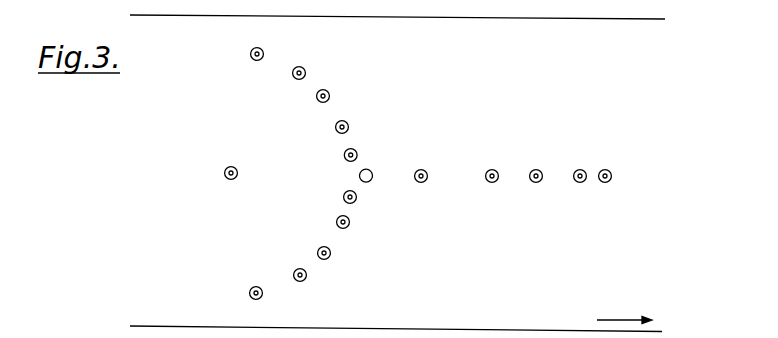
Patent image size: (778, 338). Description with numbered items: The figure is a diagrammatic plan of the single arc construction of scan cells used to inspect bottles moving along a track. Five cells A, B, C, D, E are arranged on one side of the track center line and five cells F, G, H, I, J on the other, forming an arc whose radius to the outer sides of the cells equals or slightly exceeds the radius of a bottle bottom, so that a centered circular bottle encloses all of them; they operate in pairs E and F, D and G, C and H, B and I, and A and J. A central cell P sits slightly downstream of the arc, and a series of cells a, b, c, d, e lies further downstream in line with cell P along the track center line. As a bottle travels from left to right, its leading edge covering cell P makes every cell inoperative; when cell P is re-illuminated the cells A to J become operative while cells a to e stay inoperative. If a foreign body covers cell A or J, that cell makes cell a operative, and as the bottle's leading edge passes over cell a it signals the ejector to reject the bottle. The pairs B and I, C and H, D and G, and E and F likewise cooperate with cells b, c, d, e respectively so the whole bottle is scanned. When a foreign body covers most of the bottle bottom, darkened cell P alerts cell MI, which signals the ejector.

The scan cell A is at (250, 63).
The scan cell B is at (293, 83).
The scan cell C is at (315, 105).
The scan cell D is at (333, 129).
The scan cell E is at (342, 156).
The scan cell F is at (340, 193).
The scan cell G is at (332, 220).
The scan cell H is at (315, 253).
The scan cell I is at (294, 273).
The scan cell J is at (249, 284).
The cell MI is at (228, 186).
The central cell P is at (358, 173).
The downstream cell a is at (421, 188).
The downstream cell b is at (492, 188).
The downstream cell c is at (535, 188).
The downstream cell d is at (579, 188).
The downstream cell e is at (605, 188).